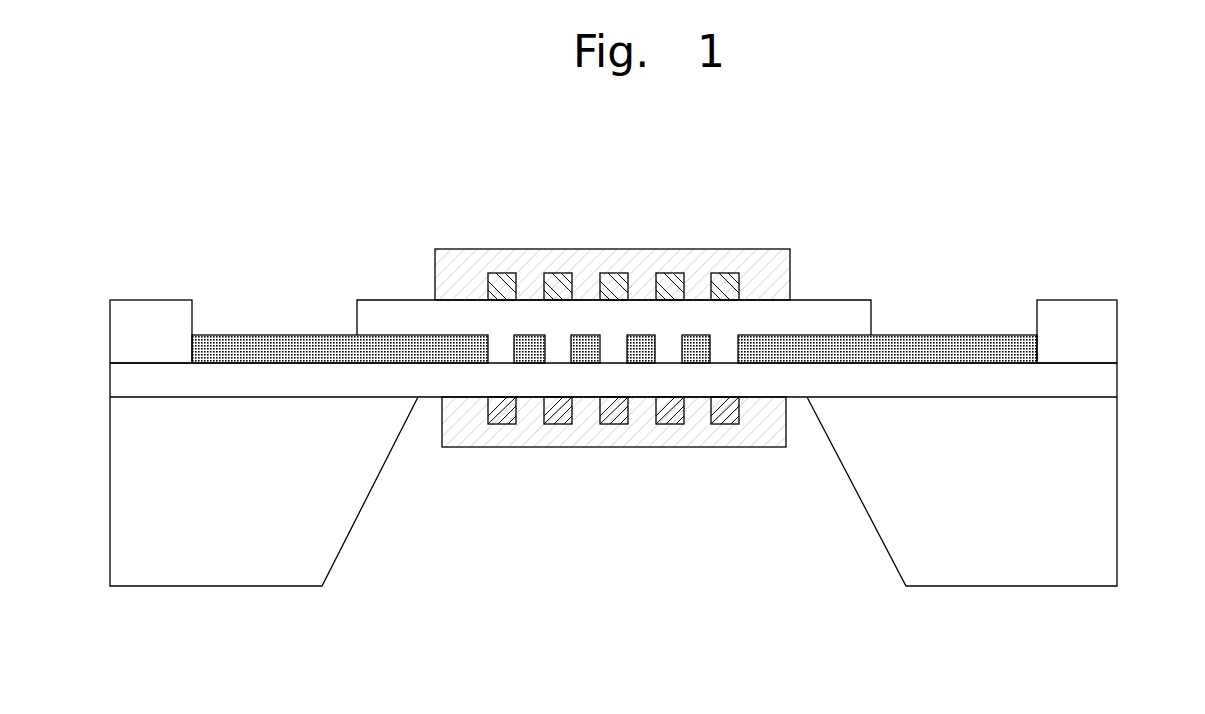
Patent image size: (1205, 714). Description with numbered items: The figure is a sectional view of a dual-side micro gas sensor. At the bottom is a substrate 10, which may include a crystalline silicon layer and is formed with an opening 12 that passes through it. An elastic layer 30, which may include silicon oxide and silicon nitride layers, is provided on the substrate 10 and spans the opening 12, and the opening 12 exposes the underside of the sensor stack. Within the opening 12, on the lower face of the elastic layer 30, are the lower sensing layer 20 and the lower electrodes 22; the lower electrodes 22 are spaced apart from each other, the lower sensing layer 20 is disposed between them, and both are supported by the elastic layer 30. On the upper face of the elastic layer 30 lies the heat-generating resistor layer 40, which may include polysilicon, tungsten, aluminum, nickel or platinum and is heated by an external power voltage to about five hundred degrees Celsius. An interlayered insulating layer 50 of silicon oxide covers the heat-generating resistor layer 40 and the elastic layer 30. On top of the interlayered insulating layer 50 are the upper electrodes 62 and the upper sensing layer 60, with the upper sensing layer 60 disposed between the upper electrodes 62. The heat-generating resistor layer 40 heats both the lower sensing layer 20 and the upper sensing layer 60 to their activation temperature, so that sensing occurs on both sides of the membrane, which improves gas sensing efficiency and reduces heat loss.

The substrate 10 is at (1110, 503).
The opening 12 is at (528, 510).
The lower sensing layer 20 is at (695, 430).
The lower electrode 22 is at (610, 415).
The elastic layer 30 is at (1110, 378).
The heat-generating resistor layer 40 is at (752, 337).
The interlayered insulating layer 50 is at (815, 311).
The upper sensing layer 60 is at (583, 262).
The upper electrode 62 is at (666, 276).